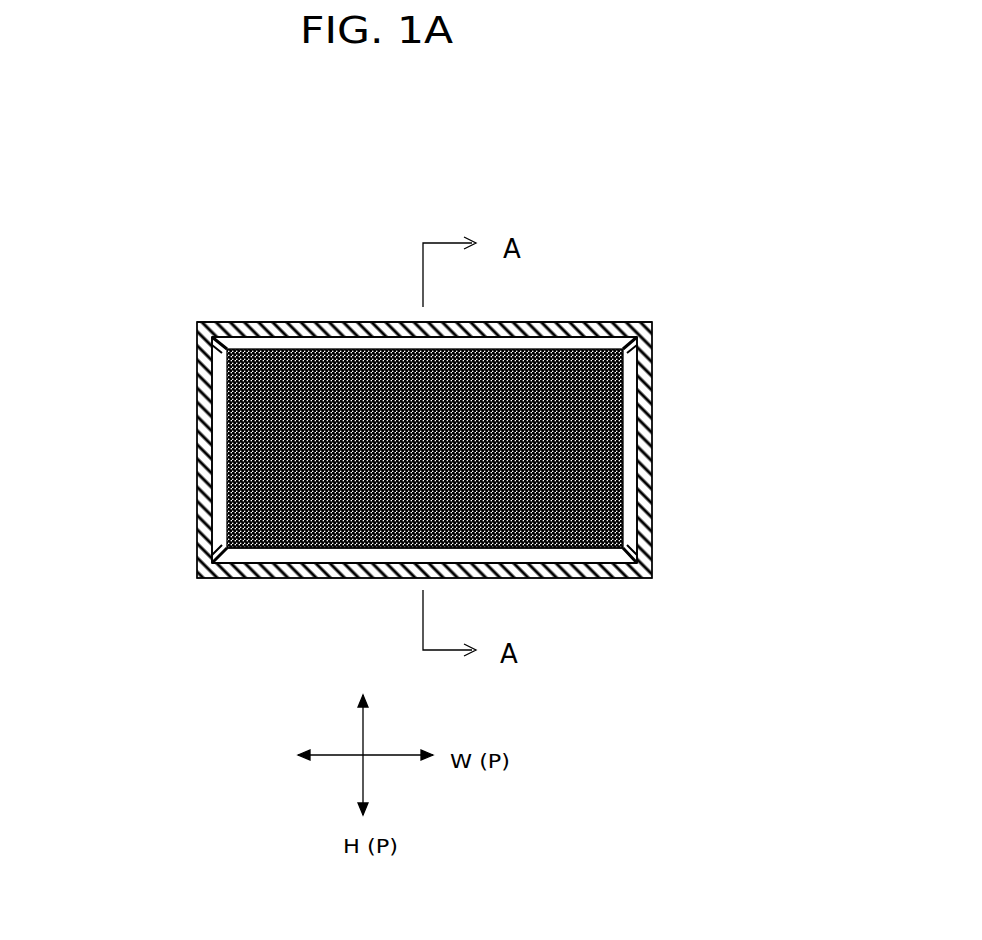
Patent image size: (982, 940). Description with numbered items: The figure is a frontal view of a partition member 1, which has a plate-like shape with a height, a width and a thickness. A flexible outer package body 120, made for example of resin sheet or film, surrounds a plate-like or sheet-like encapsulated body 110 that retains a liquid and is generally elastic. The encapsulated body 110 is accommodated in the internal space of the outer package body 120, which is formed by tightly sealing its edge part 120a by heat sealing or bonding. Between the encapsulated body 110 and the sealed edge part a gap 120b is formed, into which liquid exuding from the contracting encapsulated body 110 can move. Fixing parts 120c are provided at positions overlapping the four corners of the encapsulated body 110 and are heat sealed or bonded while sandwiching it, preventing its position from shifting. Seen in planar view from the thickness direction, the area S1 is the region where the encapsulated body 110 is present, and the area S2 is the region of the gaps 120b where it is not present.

The partition member 1 is at (637, 298).
The encapsulated body 110 is at (592, 415).
The outer package body 120 is at (340, 578).
The edge part 120a is at (265, 330).
The gap 120b is at (345, 345).
The fixing part 120c is at (200, 345).
The area of the encapsulated body S1 is at (342, 493).
The area of the gaps S2 is at (257, 557).